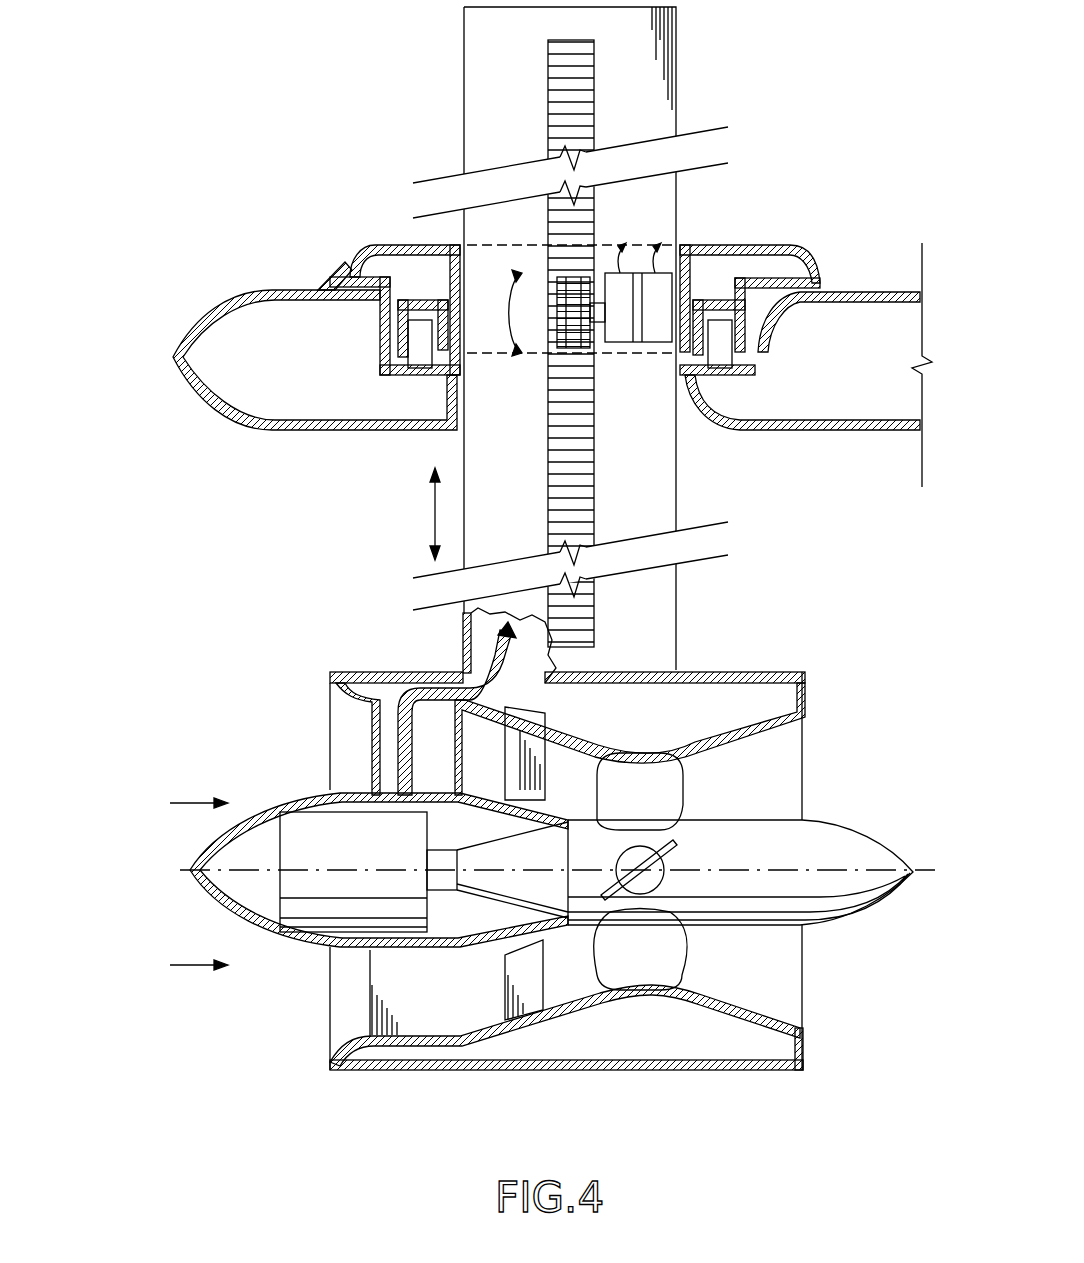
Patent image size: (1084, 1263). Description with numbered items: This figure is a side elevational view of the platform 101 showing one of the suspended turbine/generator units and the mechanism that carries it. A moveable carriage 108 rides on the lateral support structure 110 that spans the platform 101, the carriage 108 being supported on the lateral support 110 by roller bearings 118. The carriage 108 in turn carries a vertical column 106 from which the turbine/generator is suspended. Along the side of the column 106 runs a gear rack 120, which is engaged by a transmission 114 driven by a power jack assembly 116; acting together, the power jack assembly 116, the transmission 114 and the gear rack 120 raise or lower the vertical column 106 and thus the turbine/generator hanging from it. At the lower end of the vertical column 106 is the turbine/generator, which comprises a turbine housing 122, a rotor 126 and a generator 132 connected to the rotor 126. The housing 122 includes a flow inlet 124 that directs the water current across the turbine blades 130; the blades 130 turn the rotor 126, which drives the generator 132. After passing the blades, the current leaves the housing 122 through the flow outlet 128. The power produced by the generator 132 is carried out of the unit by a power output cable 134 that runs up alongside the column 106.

The platform 101 is at (221, 288).
The vertical column 106 is at (507, 45).
The carriage 108 is at (358, 242).
The lateral support 110 is at (437, 325).
The transmission 114 is at (570, 323).
The power jack assembly 116 is at (655, 292).
The roller bearing 118 is at (418, 350).
The gear rack 120 is at (565, 115).
The turbine housing 122 is at (448, 1072).
The flow inlet 124 is at (342, 1005).
The rotor 126 is at (805, 838).
The flow outlet 128 is at (750, 968).
The turbine blade 130 is at (638, 972).
The generator 132 is at (302, 822).
The power output cable 134 is at (400, 718).